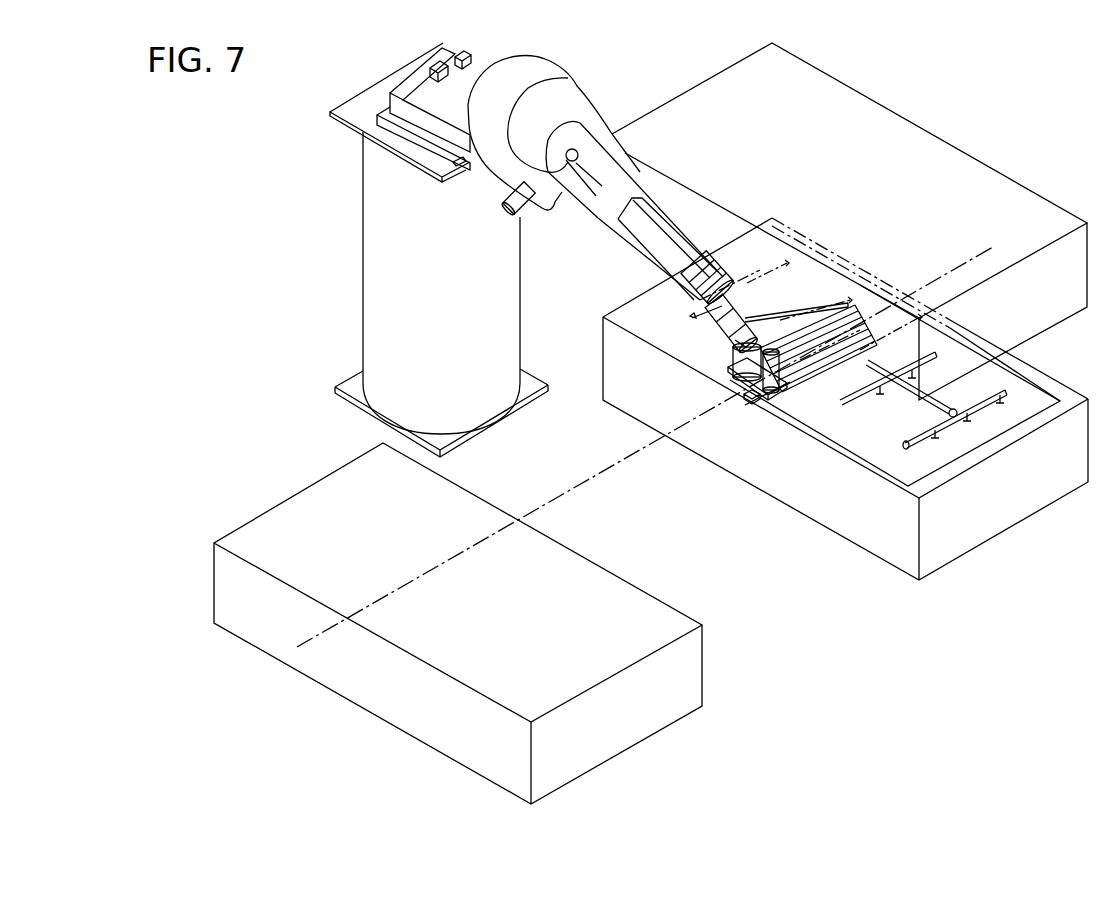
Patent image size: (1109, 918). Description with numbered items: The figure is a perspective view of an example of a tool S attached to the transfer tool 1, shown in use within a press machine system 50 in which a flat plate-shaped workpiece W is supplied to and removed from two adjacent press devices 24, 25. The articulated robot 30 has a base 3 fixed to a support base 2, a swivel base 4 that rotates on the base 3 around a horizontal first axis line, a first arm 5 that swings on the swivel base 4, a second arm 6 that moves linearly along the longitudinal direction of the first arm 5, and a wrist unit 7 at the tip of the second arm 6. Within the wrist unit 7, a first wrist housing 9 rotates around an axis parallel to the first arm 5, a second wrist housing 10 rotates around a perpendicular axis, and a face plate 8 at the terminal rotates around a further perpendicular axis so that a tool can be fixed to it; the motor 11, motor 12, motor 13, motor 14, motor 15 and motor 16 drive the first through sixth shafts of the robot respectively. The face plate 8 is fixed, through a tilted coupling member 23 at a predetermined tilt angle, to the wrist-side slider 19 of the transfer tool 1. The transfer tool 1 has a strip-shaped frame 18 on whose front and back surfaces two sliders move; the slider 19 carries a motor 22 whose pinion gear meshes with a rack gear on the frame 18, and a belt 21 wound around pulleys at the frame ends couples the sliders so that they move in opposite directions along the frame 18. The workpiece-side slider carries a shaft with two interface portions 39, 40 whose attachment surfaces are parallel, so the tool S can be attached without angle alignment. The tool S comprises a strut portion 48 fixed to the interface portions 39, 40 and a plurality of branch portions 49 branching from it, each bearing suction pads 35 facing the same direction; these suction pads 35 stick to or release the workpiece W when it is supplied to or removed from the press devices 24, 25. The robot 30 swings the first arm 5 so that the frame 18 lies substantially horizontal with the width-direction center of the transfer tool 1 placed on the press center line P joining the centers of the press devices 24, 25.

The transfer tool 1 is at (757, 435).
The support base 2 is at (353, 84).
The base 3 is at (503, 52).
The swivel base 4 is at (548, 67).
The first arm 5 is at (607, 207).
The second arm 6 is at (647, 240).
The wrist unit 7 is at (728, 340).
The face plate 8 is at (745, 362).
The first wrist housing 9 is at (740, 293).
The second wrist housing 10 is at (767, 307).
The motor of the first shaft 11 is at (432, 70).
The motor of the second shaft 12 is at (500, 198).
The motor of the third shaft 13 is at (577, 182).
The motor of the fourth shaft 14 is at (697, 258).
The motor of the fifth shaft 15 is at (708, 333).
The motor of the sixth shaft 16 is at (713, 258).
The frame 18 is at (800, 390).
The slider 19 is at (748, 398).
The belt 21 is at (795, 362).
The motor 22 is at (775, 398).
The tilted coupling member 23 is at (735, 390).
The press device 24 is at (980, 178).
The press device 25 is at (312, 472).
The articulated robot 30 is at (598, 62).
The suction pads 35 is at (910, 450).
The interface portion 39 is at (880, 325).
The interface portion 40 is at (818, 313).
The strut portion 48 is at (955, 405).
The branch portions 49 is at (922, 442).
The press machine system 50 is at (928, 103).
The workpiece W is at (1032, 395).
The tool S is at (892, 435).
The press center line P is at (560, 492).